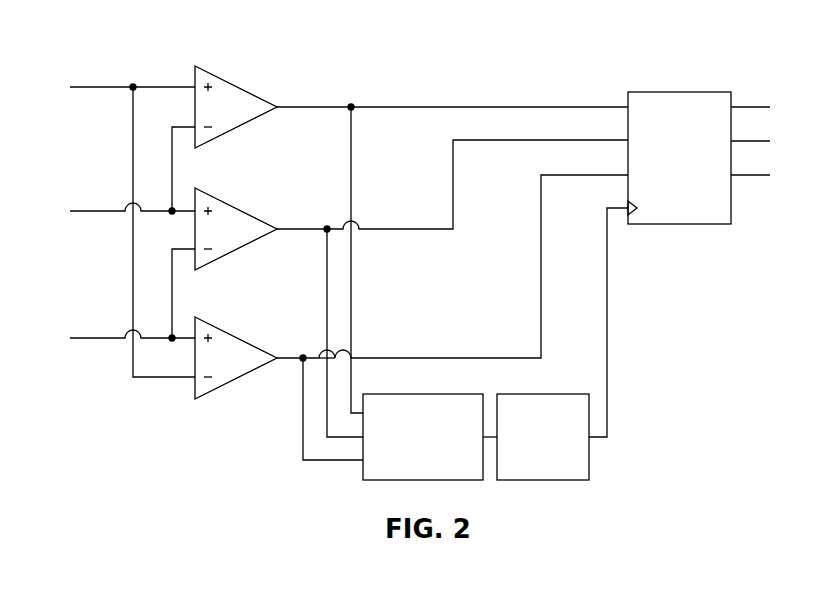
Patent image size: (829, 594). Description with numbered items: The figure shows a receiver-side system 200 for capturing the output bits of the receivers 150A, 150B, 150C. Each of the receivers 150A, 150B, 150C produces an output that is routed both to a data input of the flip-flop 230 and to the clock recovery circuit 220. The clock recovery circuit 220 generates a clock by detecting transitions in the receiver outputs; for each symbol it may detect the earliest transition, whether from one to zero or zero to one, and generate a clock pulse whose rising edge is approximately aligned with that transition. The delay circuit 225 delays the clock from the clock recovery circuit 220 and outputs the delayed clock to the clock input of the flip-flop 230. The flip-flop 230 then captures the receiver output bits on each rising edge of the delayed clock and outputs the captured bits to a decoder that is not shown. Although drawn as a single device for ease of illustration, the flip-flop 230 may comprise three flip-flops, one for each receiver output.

The receiver-side system 200 is at (135, 27).
The receiver 150A is at (243, 88).
The receiver 150B is at (243, 210).
The receiver 150C is at (243, 339).
The clock recovery circuit 220 is at (422, 394).
The delay circuit 225 is at (557, 394).
The flip-flop 230 is at (675, 92).